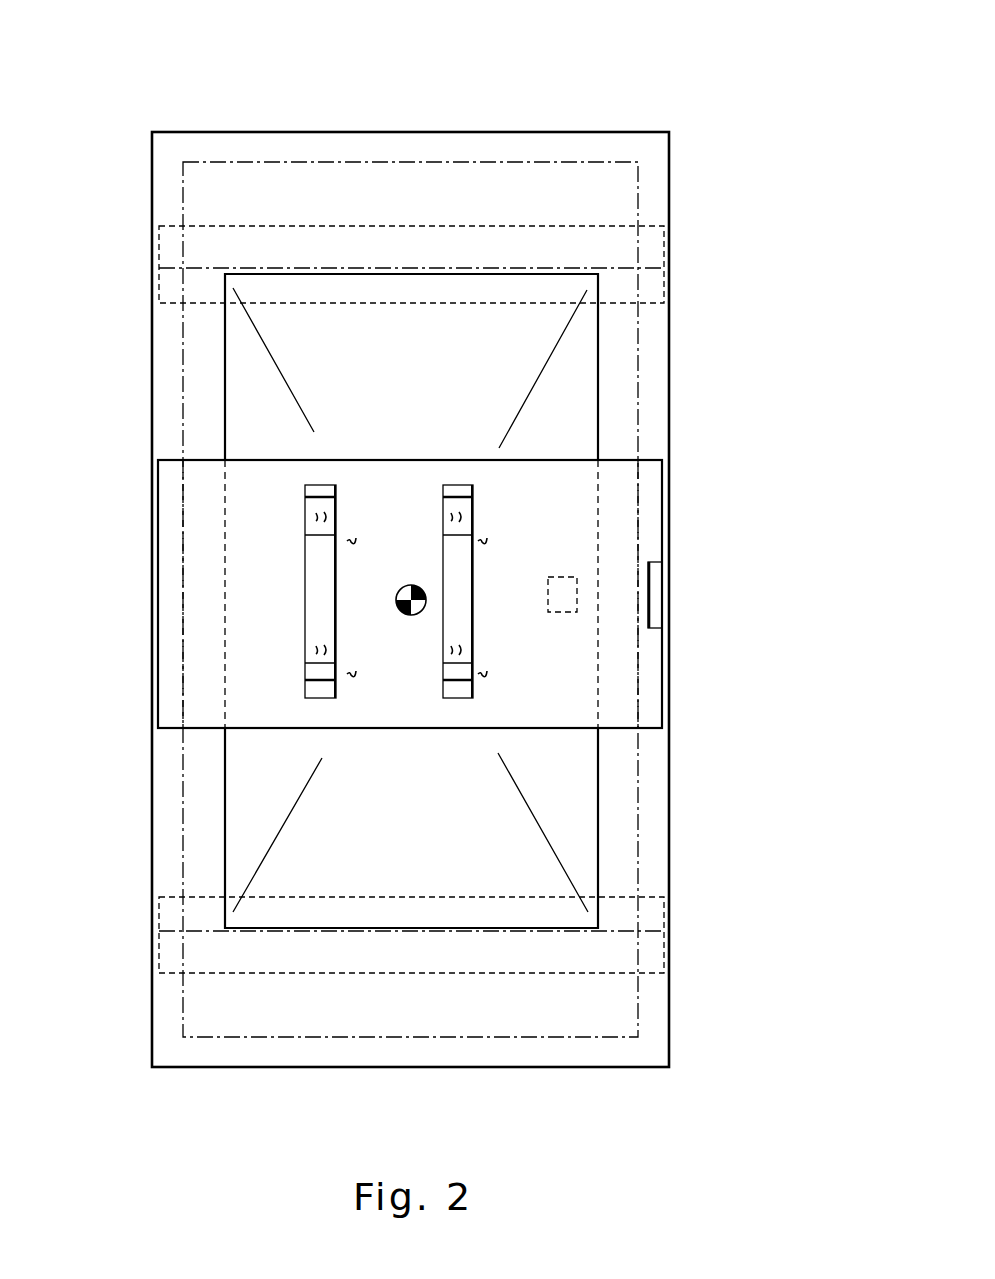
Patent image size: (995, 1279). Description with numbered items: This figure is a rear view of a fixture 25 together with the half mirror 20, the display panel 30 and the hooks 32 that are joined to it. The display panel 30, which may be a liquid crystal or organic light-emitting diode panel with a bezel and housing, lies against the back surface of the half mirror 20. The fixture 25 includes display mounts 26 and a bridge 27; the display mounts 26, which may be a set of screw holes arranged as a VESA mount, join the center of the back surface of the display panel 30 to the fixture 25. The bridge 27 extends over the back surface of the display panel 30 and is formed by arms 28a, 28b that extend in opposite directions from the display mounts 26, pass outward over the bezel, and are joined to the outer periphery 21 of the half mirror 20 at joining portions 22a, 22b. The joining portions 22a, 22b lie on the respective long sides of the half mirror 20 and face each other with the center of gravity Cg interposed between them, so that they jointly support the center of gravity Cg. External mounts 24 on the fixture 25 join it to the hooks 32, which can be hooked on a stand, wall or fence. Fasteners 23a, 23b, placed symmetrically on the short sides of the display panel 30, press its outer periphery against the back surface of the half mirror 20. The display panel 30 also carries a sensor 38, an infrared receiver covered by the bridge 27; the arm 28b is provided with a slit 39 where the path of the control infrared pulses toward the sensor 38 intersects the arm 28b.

The half mirror 20 is at (170, 132).
The outer periphery 21 is at (623, 146).
The fastener 23a is at (170, 303).
The fastener 23b is at (173, 975).
The display panel 30 is at (565, 400).
The fixture 25 is at (800, 460).
The arm 28a is at (153, 735).
The arm 28b is at (668, 735).
The joining portion 22a is at (152, 640).
The joining portion 22b is at (673, 637).
The hook 32 is at (305, 588).
The external mount 24 is at (313, 517).
The display mount 26 is at (355, 535).
The center of gravity Cg is at (408, 584).
The sensor 38 is at (560, 575).
The bridge 27 is at (650, 553).
The slit 39 is at (648, 617).